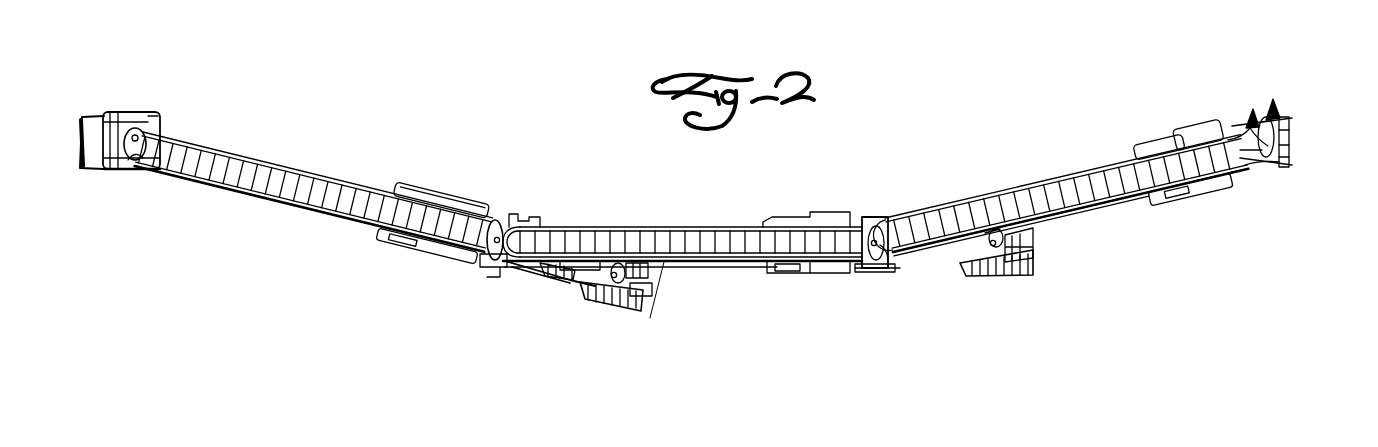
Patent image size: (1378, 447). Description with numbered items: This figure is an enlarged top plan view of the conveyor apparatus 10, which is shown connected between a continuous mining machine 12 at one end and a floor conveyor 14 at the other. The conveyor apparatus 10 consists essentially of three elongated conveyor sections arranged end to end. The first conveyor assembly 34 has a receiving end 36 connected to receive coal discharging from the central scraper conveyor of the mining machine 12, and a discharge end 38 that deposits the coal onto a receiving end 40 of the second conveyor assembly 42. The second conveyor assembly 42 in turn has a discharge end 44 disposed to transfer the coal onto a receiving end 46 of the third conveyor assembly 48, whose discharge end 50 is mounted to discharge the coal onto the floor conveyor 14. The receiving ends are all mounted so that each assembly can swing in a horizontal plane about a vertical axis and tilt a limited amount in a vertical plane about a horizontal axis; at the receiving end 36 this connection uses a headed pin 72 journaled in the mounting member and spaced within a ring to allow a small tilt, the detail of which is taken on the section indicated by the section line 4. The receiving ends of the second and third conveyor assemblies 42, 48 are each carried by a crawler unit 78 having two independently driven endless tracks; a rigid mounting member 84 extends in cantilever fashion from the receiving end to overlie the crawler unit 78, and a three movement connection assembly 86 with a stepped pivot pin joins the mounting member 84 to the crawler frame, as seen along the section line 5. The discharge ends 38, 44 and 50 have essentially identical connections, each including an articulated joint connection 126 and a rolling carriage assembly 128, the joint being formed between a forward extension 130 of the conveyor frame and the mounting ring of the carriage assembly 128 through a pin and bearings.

The conveyor apparatus 10 is at (765, 200).
The continuous mining machine 12 is at (1262, 112).
The floor conveyor 14 is at (99, 112).
The first conveyor assembly 34 is at (1081, 220).
The receiving end 36 is at (1290, 150).
The discharge end 38 is at (887, 248).
The receiving end 40 is at (857, 270).
The second conveyor assembly 42 is at (740, 270).
The discharge end 44 is at (503, 223).
The receiving end 46 is at (523, 268).
The third conveyor assembly 48 is at (305, 168).
The discharge end 50 is at (139, 152).
The headed pin 72 is at (1250, 144).
The crawler unit 78 is at (600, 310).
The rigid mounting member 84 is at (580, 262).
The three movement connection assembly 86 is at (619, 260).
The articulated joint connection 126 is at (150, 138).
The rolling carriage assembly 128 is at (151, 108).
The forward extension 130 is at (126, 160).
The section line 4- 4 is at (1252, 112).
The section line 5- 5 is at (650, 257).